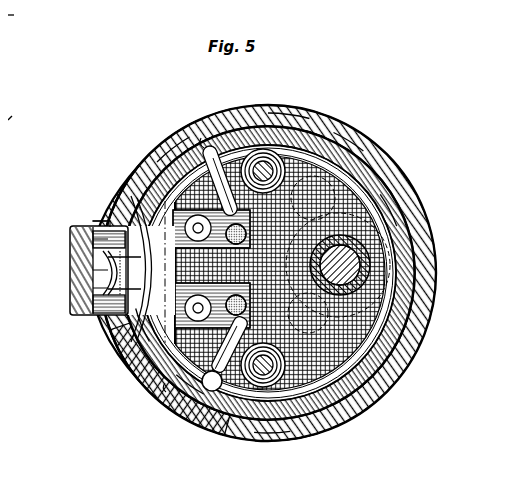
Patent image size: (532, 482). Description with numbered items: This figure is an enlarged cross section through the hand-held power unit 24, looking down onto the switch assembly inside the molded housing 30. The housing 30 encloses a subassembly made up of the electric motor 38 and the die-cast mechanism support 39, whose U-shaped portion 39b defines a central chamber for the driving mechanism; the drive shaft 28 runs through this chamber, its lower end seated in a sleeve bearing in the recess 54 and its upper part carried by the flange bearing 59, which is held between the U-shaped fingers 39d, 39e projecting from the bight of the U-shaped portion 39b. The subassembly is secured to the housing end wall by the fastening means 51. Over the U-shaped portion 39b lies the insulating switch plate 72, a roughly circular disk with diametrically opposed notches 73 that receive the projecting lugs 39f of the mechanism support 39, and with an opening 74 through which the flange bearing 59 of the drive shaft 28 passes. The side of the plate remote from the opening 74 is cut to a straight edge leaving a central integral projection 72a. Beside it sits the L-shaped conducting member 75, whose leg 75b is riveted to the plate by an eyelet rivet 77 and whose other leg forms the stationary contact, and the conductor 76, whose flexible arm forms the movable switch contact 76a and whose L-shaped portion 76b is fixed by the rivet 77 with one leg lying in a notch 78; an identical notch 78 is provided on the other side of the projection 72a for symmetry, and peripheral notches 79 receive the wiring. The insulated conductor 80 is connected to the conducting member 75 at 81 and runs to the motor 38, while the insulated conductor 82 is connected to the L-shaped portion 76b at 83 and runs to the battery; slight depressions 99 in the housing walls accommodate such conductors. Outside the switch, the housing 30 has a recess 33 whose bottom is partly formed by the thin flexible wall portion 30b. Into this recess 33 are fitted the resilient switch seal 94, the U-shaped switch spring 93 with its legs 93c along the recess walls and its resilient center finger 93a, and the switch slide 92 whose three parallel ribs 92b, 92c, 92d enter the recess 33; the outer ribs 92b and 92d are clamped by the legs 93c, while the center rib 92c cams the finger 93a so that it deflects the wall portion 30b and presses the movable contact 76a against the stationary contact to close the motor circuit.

The power unit 24 is at (0, 133).
The drive shaft 28 is at (350, 250).
The housing 30 is at (0, 80).
The flexible wall portion 30b is at (103, 173).
The recess 33 is at (92, 215).
The electric motor 38 is at (4, 108).
The mechanism support 39 is at (287, 428).
The U-shaped portion 39b is at (403, 324).
The U-shaped finger 39d is at (343, 131).
The U-shaped finger 39e is at (368, 366).
The projecting lugs 39f is at (283, 100).
The fastening means 51 is at (304, 105).
The recess 54 is at (21, 16).
The flange bearing 59 is at (385, 200).
The switch plate 72 is at (300, 215).
The integral projection 72a is at (125, 302).
The notches 73 is at (330, 140).
The opening 74 is at (342, 232).
The L-shaped conducting member 75 is at (113, 163).
The leg 75b is at (148, 143).
The conductor 76 is at (125, 340).
The movable switch contact 76a is at (118, 330).
The L-shaped portion 76b is at (150, 366).
The eyelet rivet 77 is at (163, 127).
The notch 78 is at (199, 138).
The conductor receiving notches 79 is at (216, 150).
The insulated conductor 80 is at (205, 138).
The connection 81 is at (240, 228).
The insulated conductor 82 is at (198, 400).
The connection 83 is at (238, 290).
The switch slide 92 is at (62, 220).
The rib 92b is at (63, 231).
The rib 92c is at (70, 262).
The rib 92d is at (68, 280).
The switch spring 93 is at (98, 197).
The center finger 93a is at (90, 247).
The legs 93c is at (92, 210).
The switch seal 94 is at (100, 270).
The depressions 99 is at (254, 141).